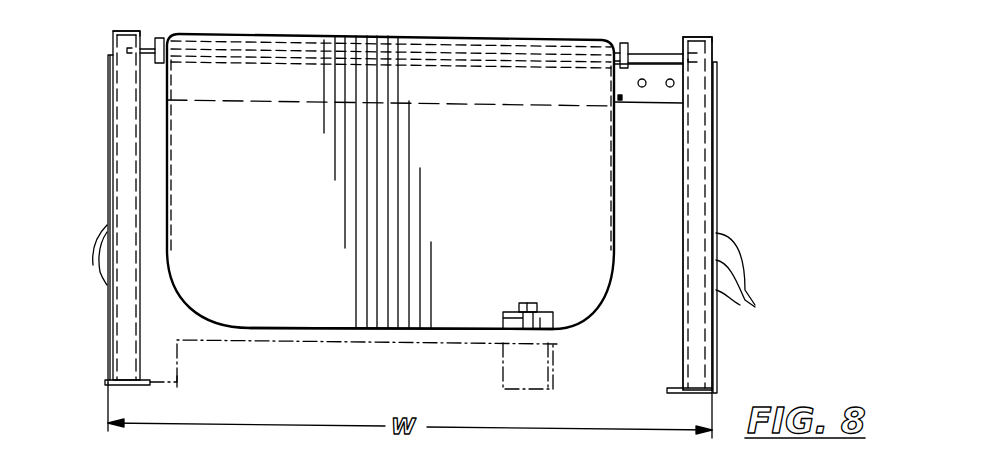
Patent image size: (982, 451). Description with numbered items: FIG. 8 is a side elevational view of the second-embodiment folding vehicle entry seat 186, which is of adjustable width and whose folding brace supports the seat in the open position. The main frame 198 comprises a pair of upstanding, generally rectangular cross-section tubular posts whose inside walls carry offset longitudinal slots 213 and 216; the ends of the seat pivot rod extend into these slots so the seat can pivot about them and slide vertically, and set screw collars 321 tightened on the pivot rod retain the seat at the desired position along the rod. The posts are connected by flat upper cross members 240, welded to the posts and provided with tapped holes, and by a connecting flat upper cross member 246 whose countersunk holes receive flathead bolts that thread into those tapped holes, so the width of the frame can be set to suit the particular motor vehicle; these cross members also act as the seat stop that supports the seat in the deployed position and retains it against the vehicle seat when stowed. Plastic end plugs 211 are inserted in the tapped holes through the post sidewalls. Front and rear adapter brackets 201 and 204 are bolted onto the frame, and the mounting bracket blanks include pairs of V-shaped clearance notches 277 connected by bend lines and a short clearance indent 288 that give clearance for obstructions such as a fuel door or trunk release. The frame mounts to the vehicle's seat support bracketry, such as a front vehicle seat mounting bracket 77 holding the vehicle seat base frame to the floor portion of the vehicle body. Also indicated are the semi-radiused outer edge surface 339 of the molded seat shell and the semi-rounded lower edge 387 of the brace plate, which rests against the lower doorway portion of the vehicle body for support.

The front vehicle seat mounting bracket 77 is at (165, 385).
The entry seat 186 is at (740, 257).
The main frame 198 is at (715, 52).
The front adapter bracket 201 is at (107, 182).
The rear adapter bracket 204 is at (715, 337).
The plastic end plugs 211 is at (125, 31).
The longitudinal slot 213 is at (130, 127).
The longitudinal slot 216 is at (695, 166).
The flat upper cross members 240 is at (672, 97).
The connecting flat upper cross member 246 is at (624, 100).
The V-shaped clearance notches 277 is at (107, 283).
The short clearance indent 288 is at (108, 212).
The collars 321 is at (160, 38).
The semi-radiused outer edge surface 339 is at (476, 53).
The semi-rounded lower edge 387 is at (387, 329).